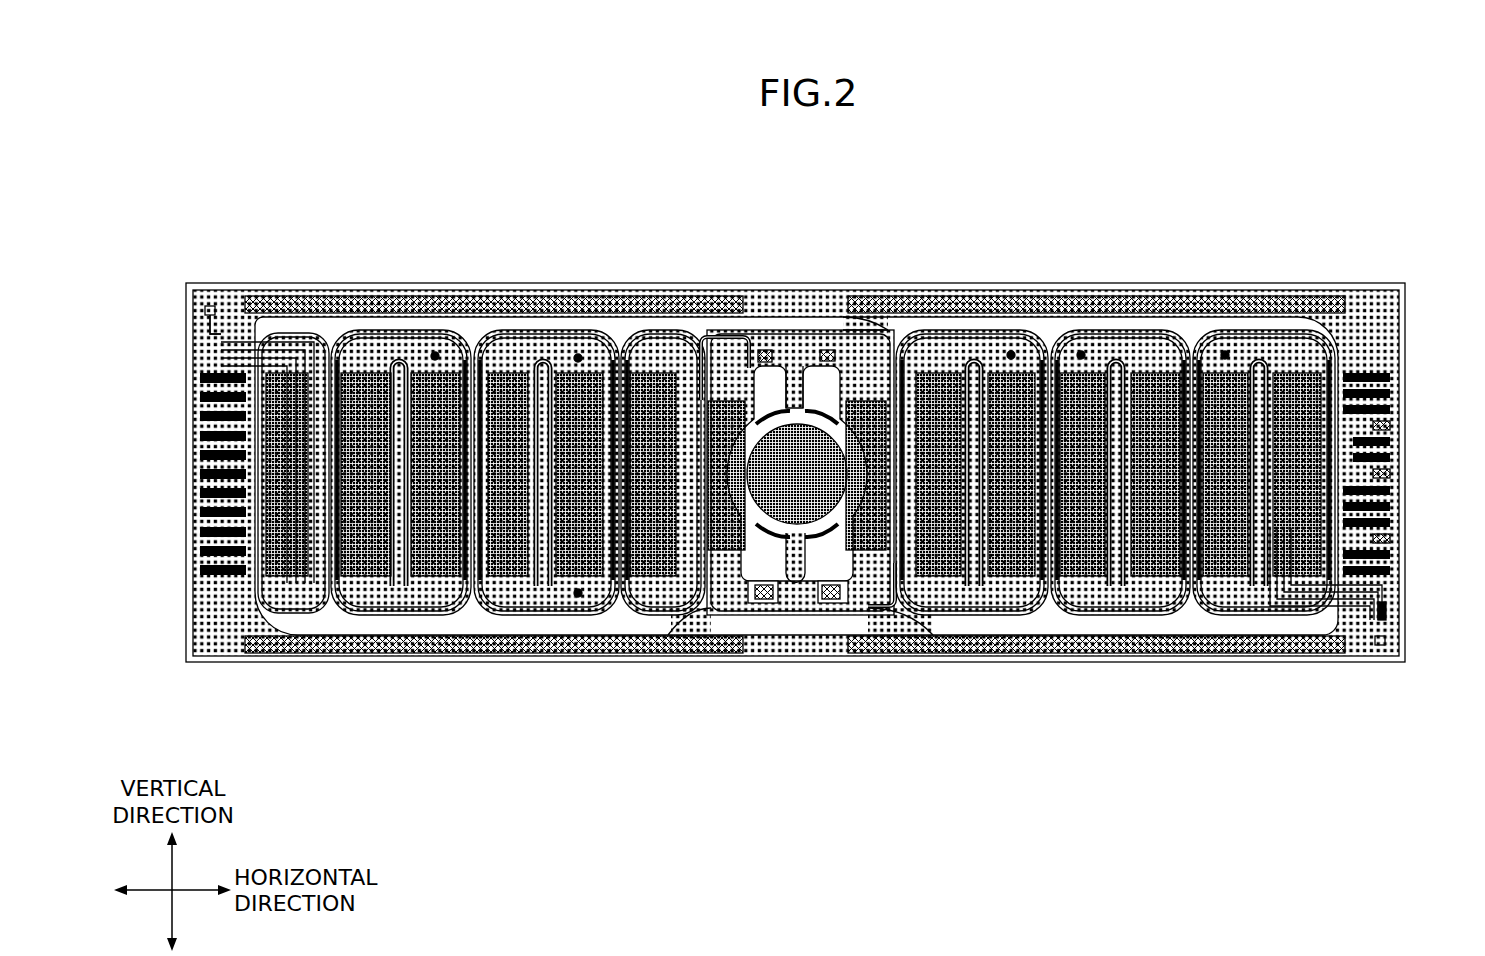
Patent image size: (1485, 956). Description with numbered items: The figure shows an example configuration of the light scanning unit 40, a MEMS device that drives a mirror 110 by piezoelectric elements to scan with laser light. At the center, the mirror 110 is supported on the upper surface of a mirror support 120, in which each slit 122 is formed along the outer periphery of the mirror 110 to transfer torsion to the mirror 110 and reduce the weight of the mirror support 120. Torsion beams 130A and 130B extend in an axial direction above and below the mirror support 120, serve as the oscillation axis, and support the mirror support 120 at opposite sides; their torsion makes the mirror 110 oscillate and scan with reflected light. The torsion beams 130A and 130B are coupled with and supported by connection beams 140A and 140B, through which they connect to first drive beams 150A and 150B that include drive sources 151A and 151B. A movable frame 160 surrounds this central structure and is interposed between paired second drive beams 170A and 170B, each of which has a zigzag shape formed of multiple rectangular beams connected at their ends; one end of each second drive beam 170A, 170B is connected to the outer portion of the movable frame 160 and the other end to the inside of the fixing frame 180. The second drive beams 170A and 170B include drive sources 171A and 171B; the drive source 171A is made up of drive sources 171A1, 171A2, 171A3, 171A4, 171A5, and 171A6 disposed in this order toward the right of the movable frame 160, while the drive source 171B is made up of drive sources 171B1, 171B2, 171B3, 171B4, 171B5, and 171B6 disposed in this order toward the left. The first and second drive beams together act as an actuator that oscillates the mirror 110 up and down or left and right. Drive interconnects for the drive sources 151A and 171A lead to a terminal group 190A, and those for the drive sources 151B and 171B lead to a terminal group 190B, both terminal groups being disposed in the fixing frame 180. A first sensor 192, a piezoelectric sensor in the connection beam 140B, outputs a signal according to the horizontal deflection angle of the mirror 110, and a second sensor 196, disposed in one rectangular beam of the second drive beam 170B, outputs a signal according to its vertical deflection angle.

The light scanning unit 40 is at (246, 150).
The mirror 110 is at (745, 445).
The mirror support 120 is at (803, 528).
The slit 122 is at (805, 412).
The torsion beam 130A is at (782, 557).
The torsion beam 130B is at (788, 382).
The connection beam 140A is at (735, 573).
The connection beam 140B is at (834, 348).
The first drive beam 150A is at (857, 546).
The first drive beam 150B is at (720, 548).
The drive source 151A is at (866, 402).
The drive source 151B is at (697, 418).
The movable frame 160 is at (831, 322).
The second drive beam 170A is at (887, 587).
The second drive beam 170B is at (640, 345).
The drive source 171A is at (1283, 762).
The drive source 171A1 is at (932, 545).
The drive source 171A2 is at (1003, 545).
The drive source 171A3 is at (1073, 545).
The drive source 171A4 is at (1153, 545).
The drive source 171A5 is at (1220, 545).
The drive source 171A6 is at (1277, 470).
The drive source 171B is at (283, 762).
The drive source 171B1 is at (645, 545).
The drive source 171B2 is at (570, 545).
The drive source 171B3 is at (497, 545).
The drive source 171B4 is at (421, 545).
The drive source 171B5 is at (360, 545).
The drive source 171B6 is at (283, 545).
The fixing frame 180 is at (1380, 590).
The terminal group 190A is at (1400, 362).
The terminal group 190B is at (172, 362).
The first sensor 192 is at (757, 342).
The second sensor 196 is at (1263, 555).